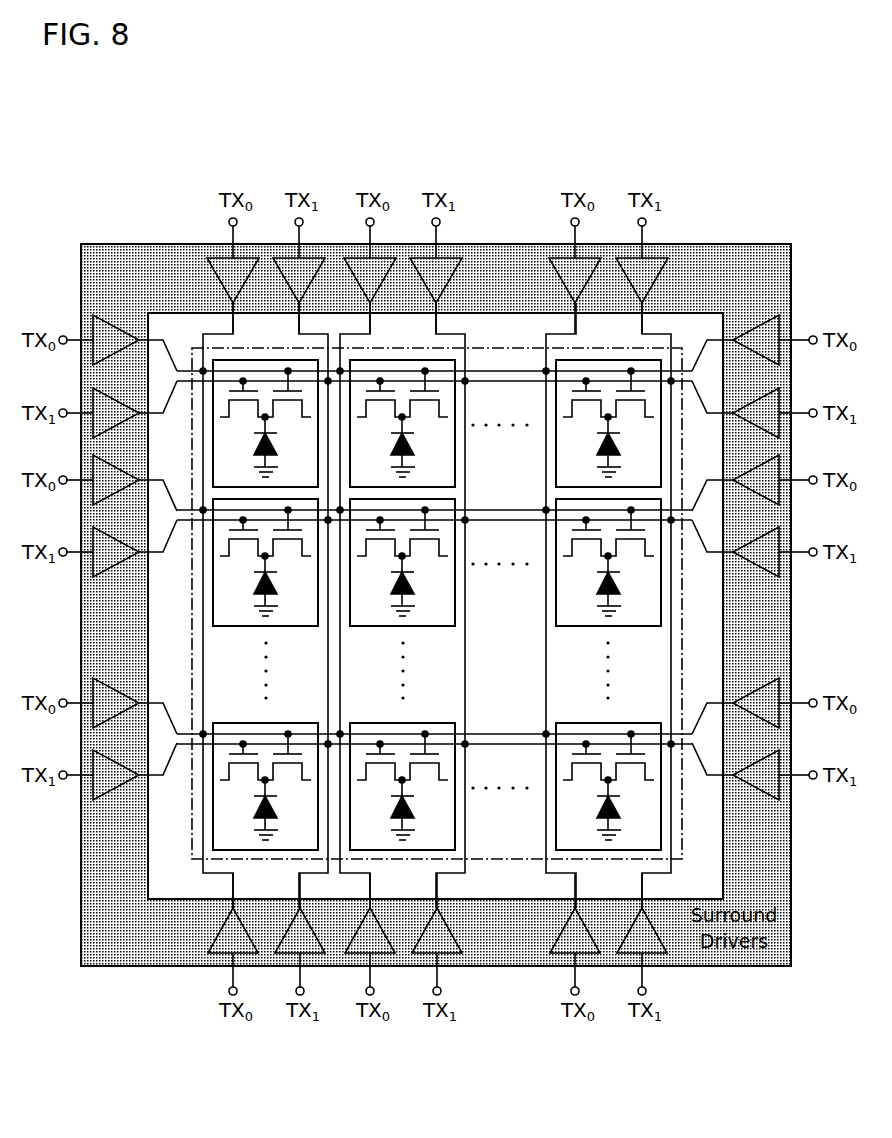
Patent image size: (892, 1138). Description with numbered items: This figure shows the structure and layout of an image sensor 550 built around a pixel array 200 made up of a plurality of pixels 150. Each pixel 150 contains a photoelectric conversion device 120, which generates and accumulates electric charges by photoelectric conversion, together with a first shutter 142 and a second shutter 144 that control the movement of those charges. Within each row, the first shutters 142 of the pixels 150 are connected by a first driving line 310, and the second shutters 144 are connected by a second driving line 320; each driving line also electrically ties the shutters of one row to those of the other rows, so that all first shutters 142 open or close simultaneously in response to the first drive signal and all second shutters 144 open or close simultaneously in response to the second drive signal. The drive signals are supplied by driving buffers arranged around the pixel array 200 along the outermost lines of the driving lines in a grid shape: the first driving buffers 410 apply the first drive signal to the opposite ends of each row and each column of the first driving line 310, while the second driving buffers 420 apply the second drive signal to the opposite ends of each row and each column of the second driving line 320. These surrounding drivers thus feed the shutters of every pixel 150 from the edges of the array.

The image sensor 550 is at (461, 163).
The pixel array 200 is at (683, 347).
The first driving buffer 410 is at (223, 258).
The second driving buffer 420 is at (317, 258).
The first driving line 310 is at (483, 370).
The second driving line 320 is at (527, 380).
The pixel 150 is at (175, 328).
The second shutter 144 is at (225, 410).
The first shutter 142 is at (272, 410).
The photoelectric conversion device 120 is at (257, 443).